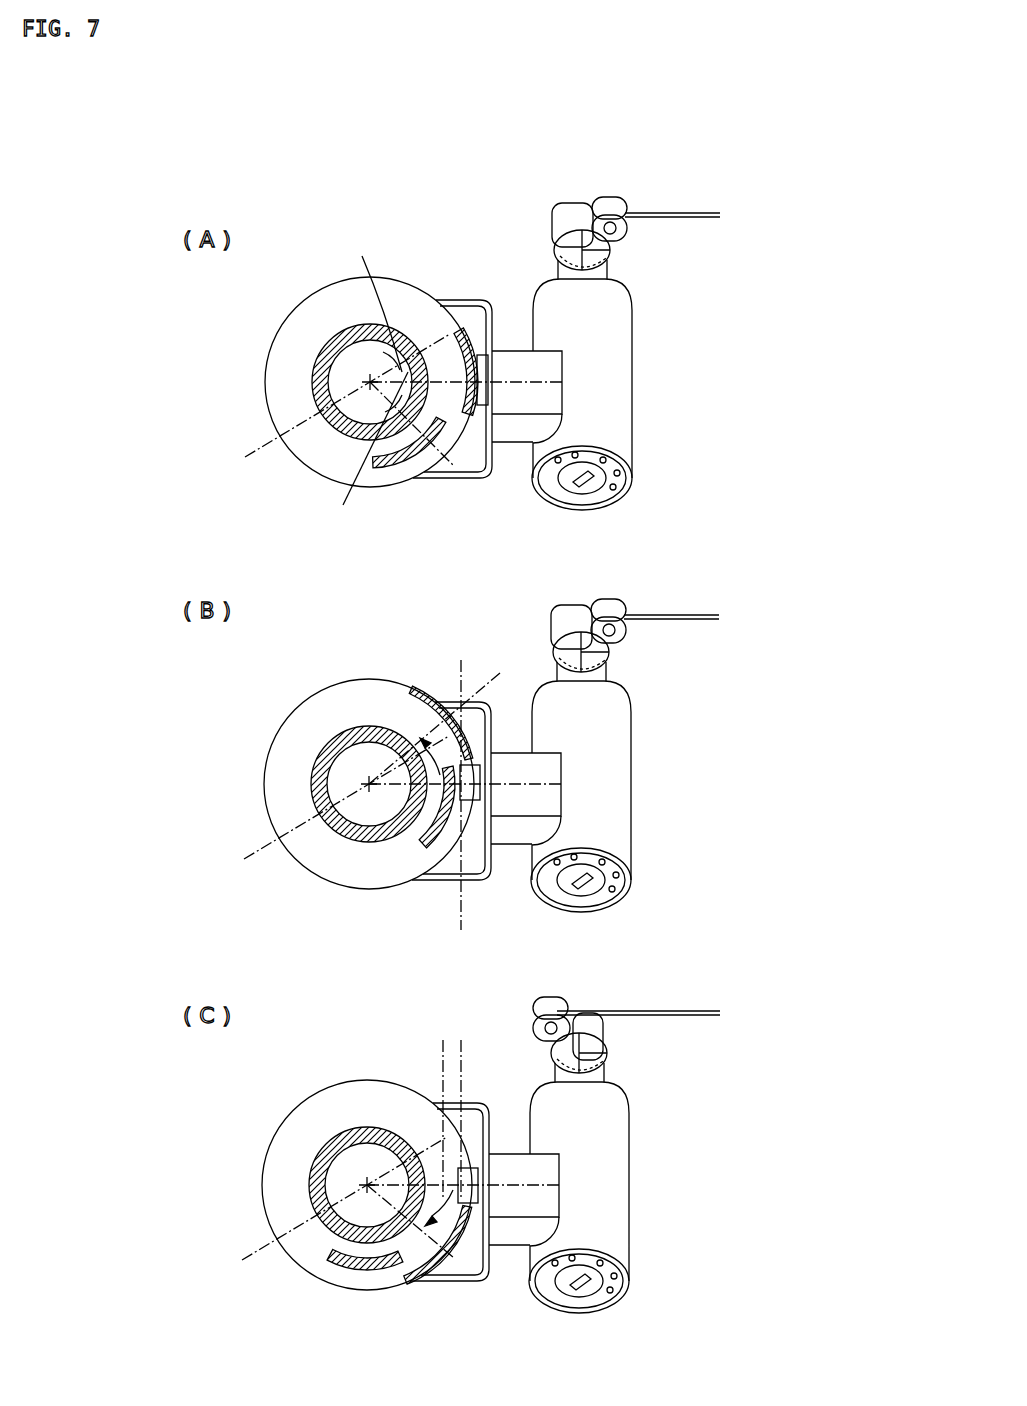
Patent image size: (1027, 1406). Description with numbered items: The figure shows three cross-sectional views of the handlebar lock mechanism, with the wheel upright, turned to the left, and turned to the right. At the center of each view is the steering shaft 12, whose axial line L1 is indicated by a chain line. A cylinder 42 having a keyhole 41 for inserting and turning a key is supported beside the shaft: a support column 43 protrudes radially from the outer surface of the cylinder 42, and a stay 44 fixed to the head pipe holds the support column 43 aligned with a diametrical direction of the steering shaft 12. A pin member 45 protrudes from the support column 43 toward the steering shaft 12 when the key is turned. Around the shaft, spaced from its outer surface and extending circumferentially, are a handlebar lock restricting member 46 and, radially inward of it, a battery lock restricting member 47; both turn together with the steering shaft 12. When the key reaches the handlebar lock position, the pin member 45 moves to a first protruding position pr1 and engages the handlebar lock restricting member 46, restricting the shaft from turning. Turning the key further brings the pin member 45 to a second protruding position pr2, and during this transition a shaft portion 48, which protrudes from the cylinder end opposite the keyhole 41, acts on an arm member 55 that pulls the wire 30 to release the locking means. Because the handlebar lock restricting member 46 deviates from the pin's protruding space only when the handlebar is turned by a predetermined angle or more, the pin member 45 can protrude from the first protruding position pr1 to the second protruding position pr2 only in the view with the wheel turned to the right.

The steering shaft 12 is at (318, 357).
The wire 30 is at (680, 212).
The keyhole 41 is at (583, 480).
The cylinder 42 is at (627, 381).
The support column 43 is at (512, 442).
The stay 44 is at (455, 479).
The pin member 45 is at (480, 355).
The handlebar lock restricting member 46 is at (448, 350).
The battery lock restricting member 47 is at (400, 470).
The shaft portion 48 is at (560, 262).
The arm member 55 is at (578, 195).
The axial line of the steering shaft L1 is at (331, 797).
The first protruding position pr1 is at (463, 922).
The second protruding position pr2 is at (442, 1050).